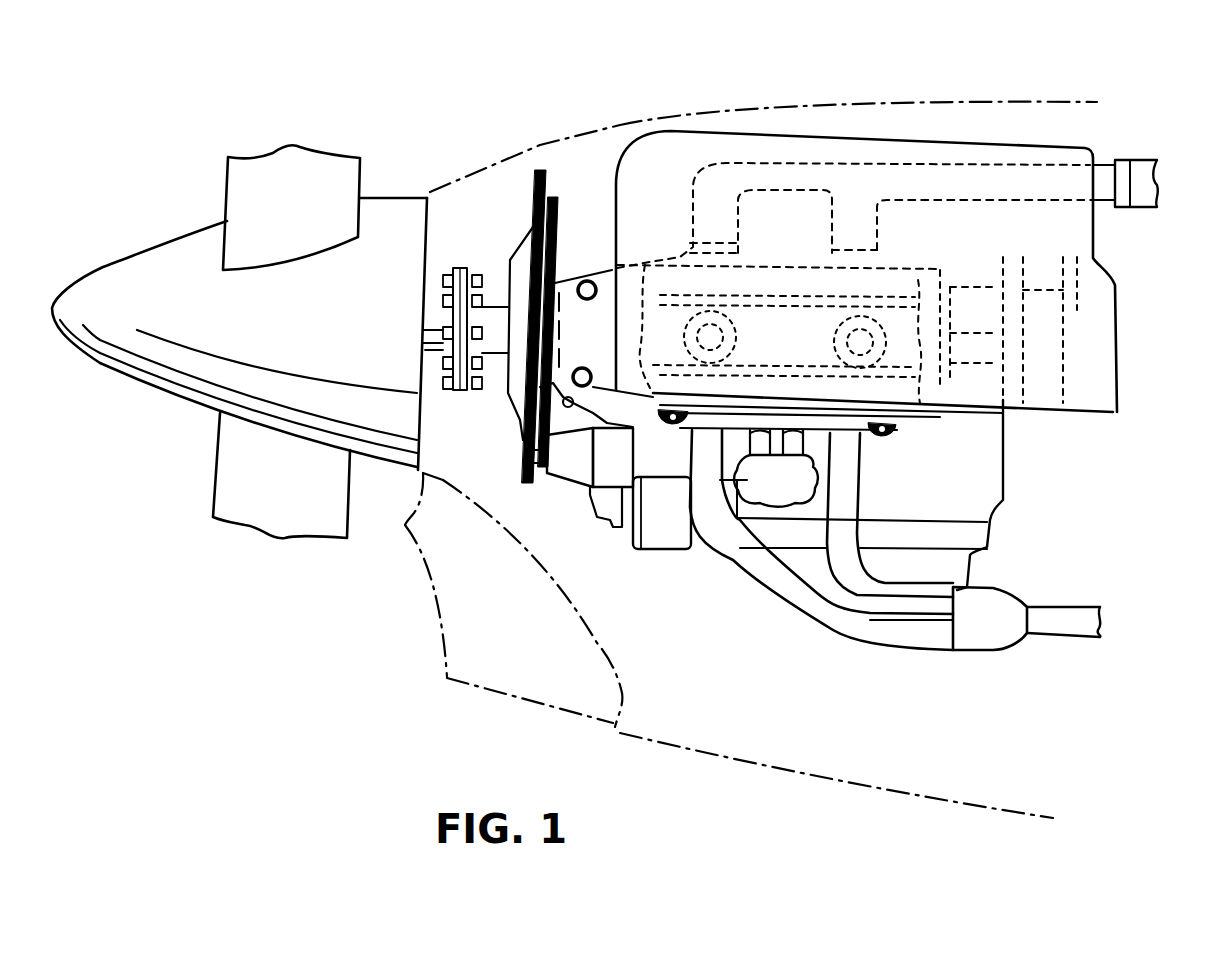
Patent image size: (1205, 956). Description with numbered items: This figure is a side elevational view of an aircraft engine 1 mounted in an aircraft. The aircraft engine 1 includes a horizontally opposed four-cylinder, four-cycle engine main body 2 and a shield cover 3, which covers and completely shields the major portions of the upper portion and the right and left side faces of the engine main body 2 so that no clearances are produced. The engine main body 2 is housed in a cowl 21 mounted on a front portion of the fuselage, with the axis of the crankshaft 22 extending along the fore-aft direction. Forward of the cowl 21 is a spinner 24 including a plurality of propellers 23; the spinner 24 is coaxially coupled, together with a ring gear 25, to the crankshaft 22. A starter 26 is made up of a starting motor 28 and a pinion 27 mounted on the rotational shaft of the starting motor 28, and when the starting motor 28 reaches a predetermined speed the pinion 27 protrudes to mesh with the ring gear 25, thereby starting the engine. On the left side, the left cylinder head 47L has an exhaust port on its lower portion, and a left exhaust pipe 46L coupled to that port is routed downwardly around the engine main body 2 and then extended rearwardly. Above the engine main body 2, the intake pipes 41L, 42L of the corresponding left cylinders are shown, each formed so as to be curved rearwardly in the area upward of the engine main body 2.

The aircraft engine 1 is at (993, 132).
The engine main body 2 is at (982, 508).
The shield cover 3 is at (632, 148).
The cowl 21 is at (783, 773).
The crankshaft 22 is at (493, 307).
The propellers 23 is at (228, 185).
The spinner 24 is at (130, 343).
The ring gear 25 is at (540, 170).
The starter 26 is at (657, 553).
The pinion 27 is at (522, 452).
The starting motor 28 is at (563, 463).
The intake pipe 41L is at (760, 163).
The intake pipe 42L is at (907, 160).
The left exhaust pipe 46L is at (840, 577).
The left cylinder head 47L is at (940, 413).